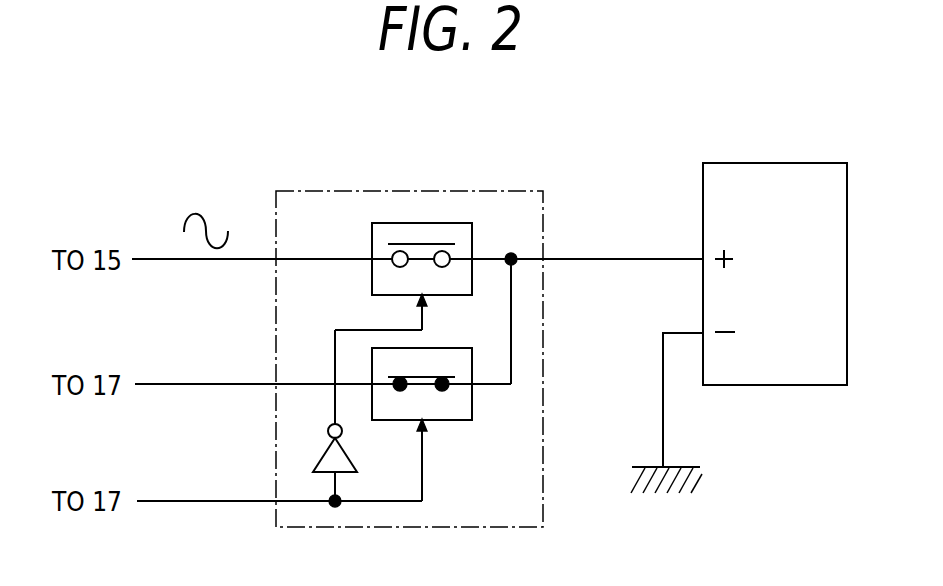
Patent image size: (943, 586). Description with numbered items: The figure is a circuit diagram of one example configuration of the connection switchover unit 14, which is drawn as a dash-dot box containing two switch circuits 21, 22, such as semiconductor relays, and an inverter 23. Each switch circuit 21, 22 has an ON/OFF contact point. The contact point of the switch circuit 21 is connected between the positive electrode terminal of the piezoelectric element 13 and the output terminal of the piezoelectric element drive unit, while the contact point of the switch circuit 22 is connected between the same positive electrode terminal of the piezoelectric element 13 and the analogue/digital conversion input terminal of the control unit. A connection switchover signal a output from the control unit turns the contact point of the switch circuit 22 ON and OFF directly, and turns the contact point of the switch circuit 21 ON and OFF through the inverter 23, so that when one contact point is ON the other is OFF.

The piezoelectric element 13 is at (792, 163).
The connection switchover unit 14 is at (497, 191).
The switch circuit 21 is at (371, 243).
The switch circuit 22 is at (451, 421).
The inverter 23 is at (322, 452).
The connection switchover signal a is at (188, 500).